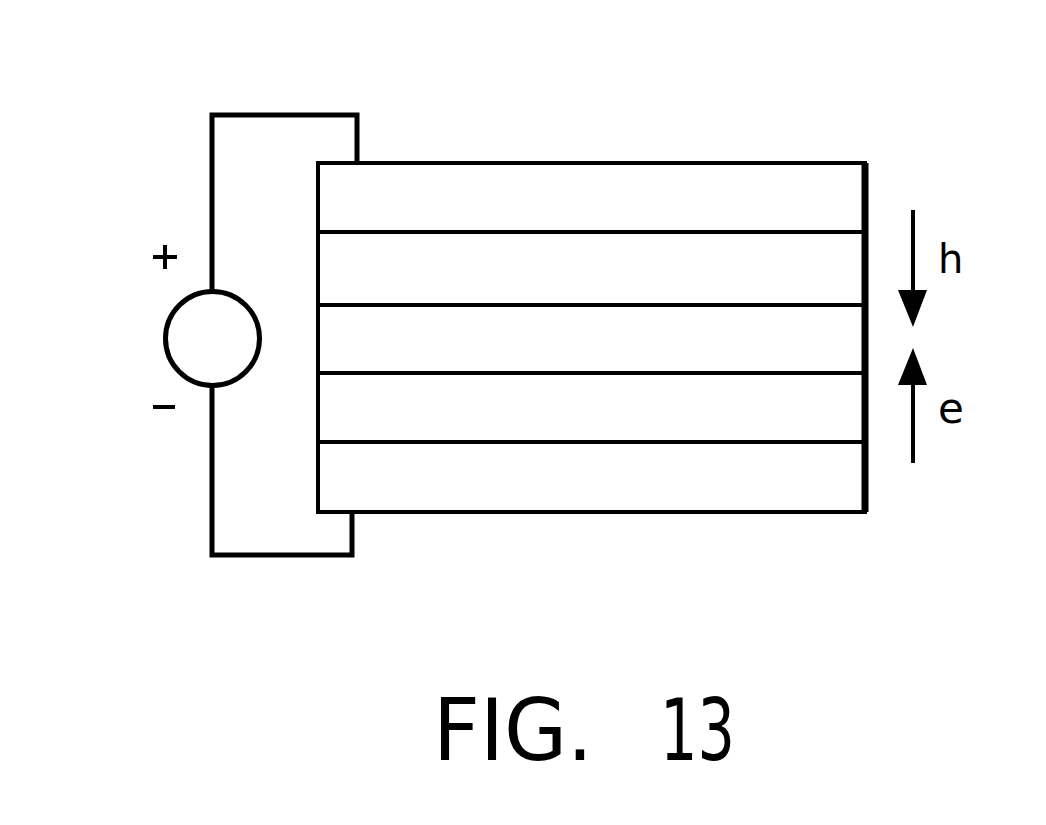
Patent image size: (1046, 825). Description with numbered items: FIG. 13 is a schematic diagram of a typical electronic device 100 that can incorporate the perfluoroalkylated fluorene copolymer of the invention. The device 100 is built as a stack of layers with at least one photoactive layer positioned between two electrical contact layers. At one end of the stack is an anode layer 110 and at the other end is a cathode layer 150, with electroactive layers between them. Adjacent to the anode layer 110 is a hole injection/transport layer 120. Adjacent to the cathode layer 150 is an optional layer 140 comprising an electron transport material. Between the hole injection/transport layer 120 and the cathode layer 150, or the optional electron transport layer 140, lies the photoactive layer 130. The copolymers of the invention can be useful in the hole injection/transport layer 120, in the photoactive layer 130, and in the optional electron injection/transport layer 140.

The device 100 is at (138, 149).
The anode layer 110 is at (597, 200).
The hole injection/transport layer 120 is at (720, 258).
The photoactive layer 130 is at (792, 340).
The electron transport layer 140 is at (678, 422).
The cathode layer 150 is at (560, 482).